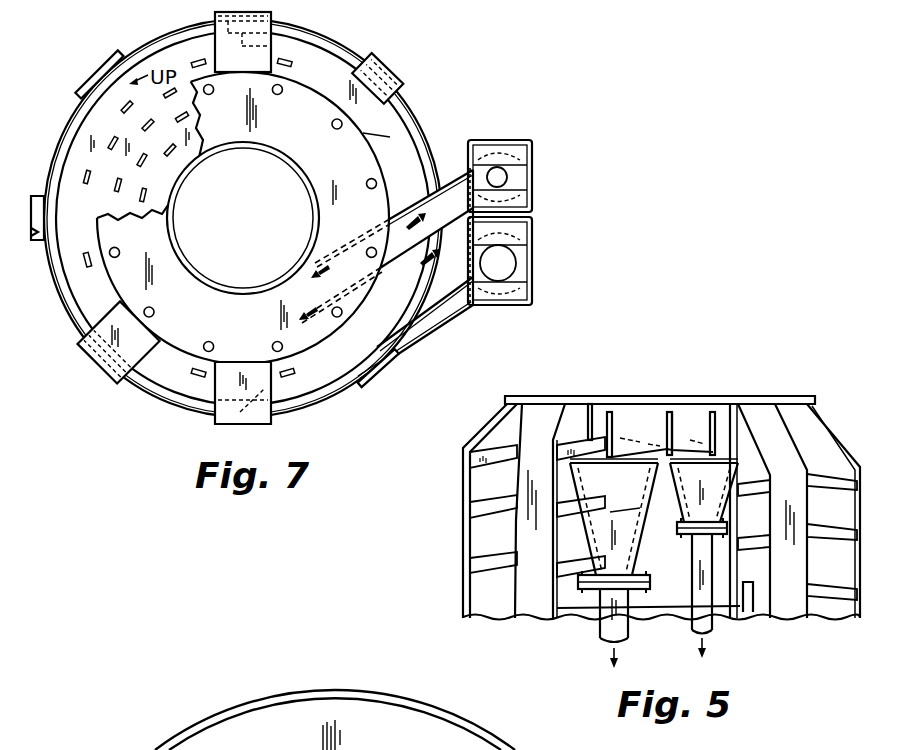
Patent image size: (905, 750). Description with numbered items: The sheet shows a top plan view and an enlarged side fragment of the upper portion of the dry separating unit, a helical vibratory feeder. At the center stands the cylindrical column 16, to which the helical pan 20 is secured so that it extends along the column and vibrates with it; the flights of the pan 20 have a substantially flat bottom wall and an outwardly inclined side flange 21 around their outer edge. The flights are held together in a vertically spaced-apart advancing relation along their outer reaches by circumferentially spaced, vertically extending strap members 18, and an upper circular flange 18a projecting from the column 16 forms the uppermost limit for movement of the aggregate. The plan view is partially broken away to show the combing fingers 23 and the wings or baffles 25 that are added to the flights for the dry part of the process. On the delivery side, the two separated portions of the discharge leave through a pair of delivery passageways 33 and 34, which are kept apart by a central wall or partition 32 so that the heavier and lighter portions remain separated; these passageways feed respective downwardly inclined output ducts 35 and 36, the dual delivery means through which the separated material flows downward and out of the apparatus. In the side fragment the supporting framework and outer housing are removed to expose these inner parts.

In FIG. 7, the column 16 is at (203, 283).
In FIG. 5, the column 16 is at (749, 584).
In FIG. 7, the strap members 18 is at (96, 78).
In FIG. 5, the strap members 18 is at (463, 538).
In FIG. 7, the upper circular flange 18a is at (372, 146).
In FIG. 5, the upper circular flange 18a is at (540, 397).
In FIG. 7, the pan 20 is at (97, 117).
In FIG. 5, the pan 20 is at (508, 563).
In FIG. 7, the side flange 21 is at (157, 401).
In FIG. 7, the combing fingers 23 is at (195, 60).
In FIG. 7, the baffles 25 is at (272, 22).
In FIG. 7, the central partition 32 is at (404, 253).
In FIG. 5, the central partition 32 is at (672, 425).
In FIG. 7, the delivery passageway 33 is at (418, 318).
In FIG. 5, the delivery passageway 33 is at (613, 470).
In FIG. 7, the delivery passageway 34 is at (452, 190).
In FIG. 5, the delivery passageway 34 is at (713, 465).
In FIG. 7, the output duct 35 is at (532, 298).
In FIG. 5, the output duct 35 is at (633, 556).
In FIG. 7, the output duct 36 is at (532, 180).
In FIG. 5, the output duct 36 is at (714, 503).